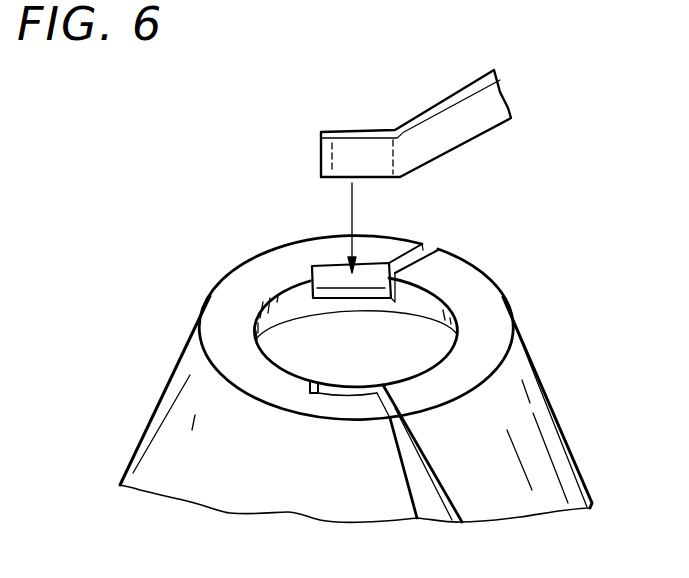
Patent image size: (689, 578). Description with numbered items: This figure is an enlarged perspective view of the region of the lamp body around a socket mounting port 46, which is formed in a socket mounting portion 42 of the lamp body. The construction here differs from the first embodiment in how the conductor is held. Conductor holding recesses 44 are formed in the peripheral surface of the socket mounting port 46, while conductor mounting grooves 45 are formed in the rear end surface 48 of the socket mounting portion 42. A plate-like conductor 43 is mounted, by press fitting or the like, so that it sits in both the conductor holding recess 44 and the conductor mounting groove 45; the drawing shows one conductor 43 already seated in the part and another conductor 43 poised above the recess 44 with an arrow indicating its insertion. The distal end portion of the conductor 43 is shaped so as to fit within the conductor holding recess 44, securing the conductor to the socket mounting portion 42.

The socket mounting portion 42 is at (190, 337).
The plate-like conductor 43 is at (470, 122).
The conductor holding recess 44 is at (328, 273).
The conductor mounting groove 45 is at (425, 247).
The socket mounting port 46 is at (417, 327).
The rear end surface 48 is at (267, 272).